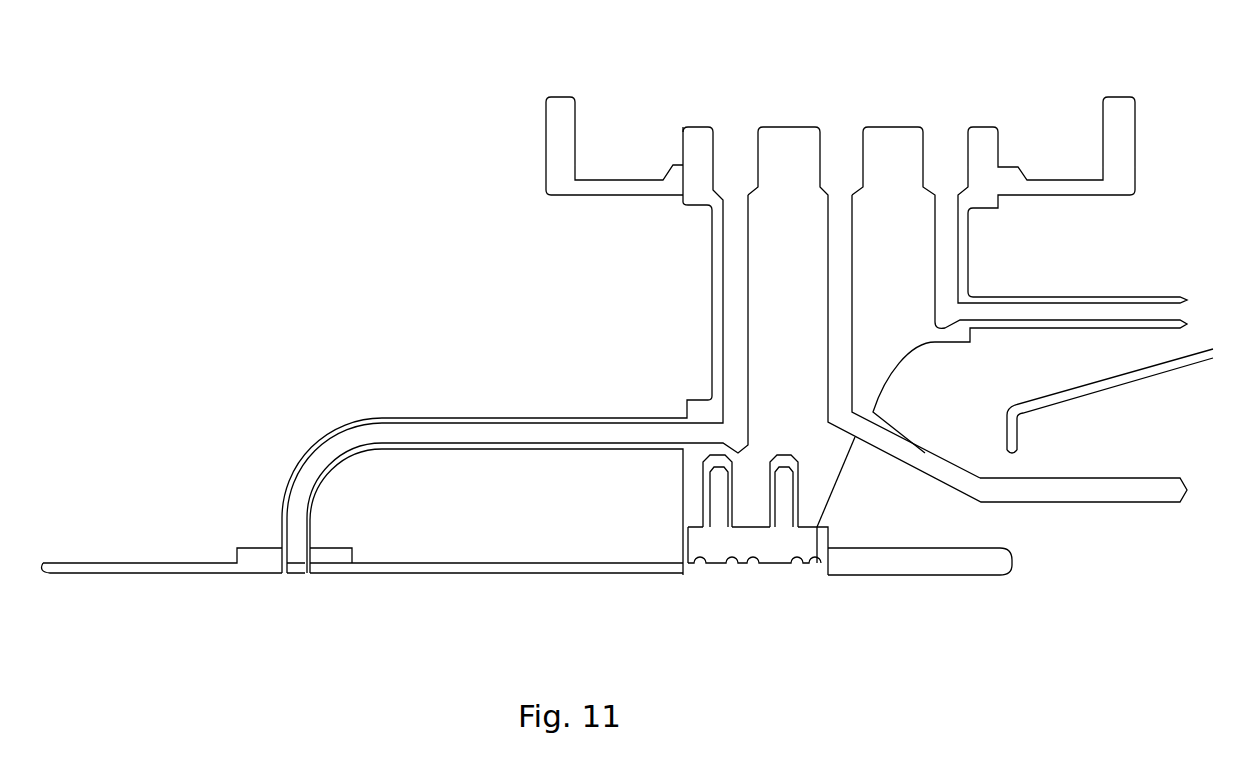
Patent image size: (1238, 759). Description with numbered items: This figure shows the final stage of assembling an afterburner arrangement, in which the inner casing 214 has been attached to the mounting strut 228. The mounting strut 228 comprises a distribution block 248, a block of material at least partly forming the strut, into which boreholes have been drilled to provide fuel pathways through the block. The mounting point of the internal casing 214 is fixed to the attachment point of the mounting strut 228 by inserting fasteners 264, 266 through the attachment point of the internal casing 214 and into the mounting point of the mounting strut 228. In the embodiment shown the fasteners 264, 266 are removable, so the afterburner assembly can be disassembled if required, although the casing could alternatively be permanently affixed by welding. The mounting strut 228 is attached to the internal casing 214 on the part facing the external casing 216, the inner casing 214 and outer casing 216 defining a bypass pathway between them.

The inner casing 214 is at (543, 577).
The outer casing 216 is at (546, 162).
The mounting strut 228 is at (793, 105).
The distribution block 248 is at (712, 303).
The fastener 264 is at (715, 515).
The fastener 266 is at (785, 510).